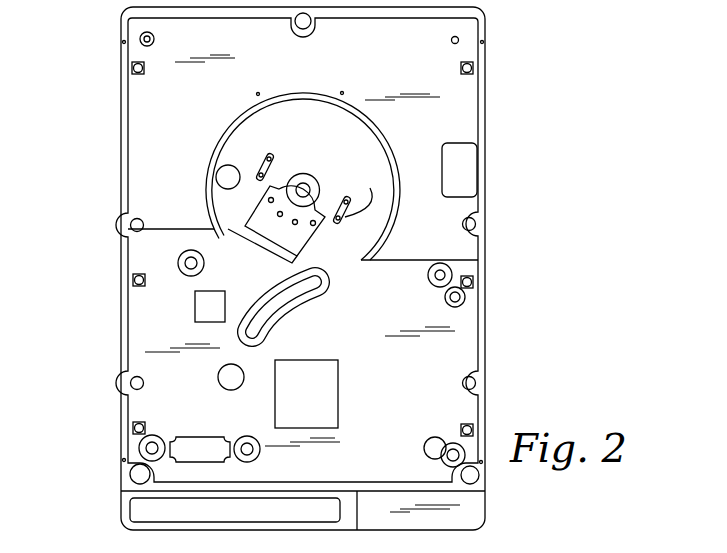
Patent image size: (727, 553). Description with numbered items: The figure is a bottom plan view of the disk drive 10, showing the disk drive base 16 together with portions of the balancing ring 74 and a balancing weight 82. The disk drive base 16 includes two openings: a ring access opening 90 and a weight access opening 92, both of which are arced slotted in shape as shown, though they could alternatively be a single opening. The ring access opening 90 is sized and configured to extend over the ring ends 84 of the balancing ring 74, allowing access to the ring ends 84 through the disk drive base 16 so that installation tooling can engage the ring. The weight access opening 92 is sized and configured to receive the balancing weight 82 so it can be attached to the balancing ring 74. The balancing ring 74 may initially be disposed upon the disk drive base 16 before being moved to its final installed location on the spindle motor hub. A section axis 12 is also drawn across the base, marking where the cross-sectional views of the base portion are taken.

The disk drive 10 is at (100, 44).
The axis 12- 12 is at (240, 150).
The disk drive base 16 is at (122, 270).
The balancing ring 74 is at (276, 160).
The balancing weight 82 is at (268, 157).
The ring ends 84 is at (358, 194).
The ring access opening 90 is at (273, 143).
The weight access opening 92 is at (348, 188).